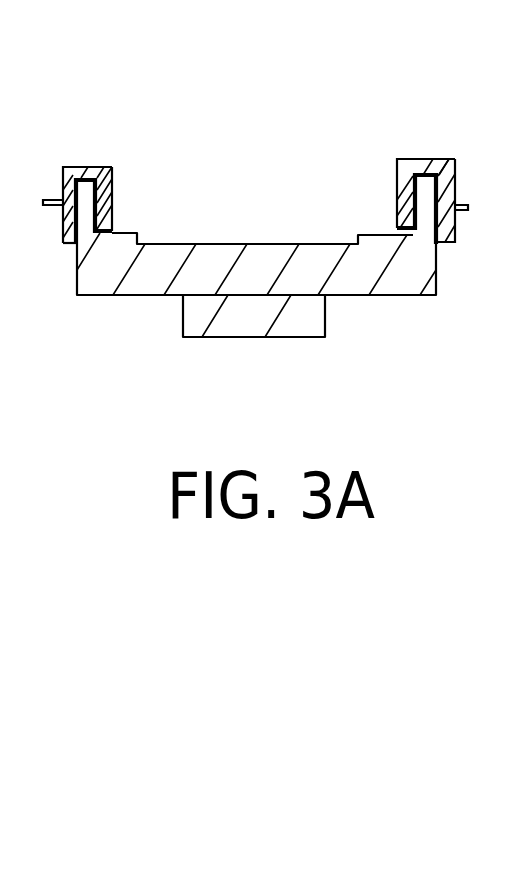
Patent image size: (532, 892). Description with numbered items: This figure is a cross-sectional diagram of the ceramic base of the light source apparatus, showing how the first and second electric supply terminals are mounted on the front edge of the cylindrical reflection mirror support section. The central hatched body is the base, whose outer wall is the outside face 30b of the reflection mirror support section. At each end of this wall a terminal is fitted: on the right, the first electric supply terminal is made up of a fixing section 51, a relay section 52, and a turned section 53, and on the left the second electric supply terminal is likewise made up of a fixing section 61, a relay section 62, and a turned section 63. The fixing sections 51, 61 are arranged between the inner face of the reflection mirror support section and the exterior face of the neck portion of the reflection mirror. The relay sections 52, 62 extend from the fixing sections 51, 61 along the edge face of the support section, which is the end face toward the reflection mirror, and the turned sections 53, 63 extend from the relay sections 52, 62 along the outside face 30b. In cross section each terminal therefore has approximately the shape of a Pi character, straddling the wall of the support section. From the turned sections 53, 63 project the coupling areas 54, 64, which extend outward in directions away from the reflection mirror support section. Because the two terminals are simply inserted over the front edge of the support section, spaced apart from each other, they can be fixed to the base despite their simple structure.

The outside face of the reflection mirror support section 30b is at (438, 279).
The fixing section 51 is at (402, 192).
The relay section 52 is at (422, 158).
The turned section 53 is at (455, 185).
The coupling area 54 is at (468, 208).
The fixing section 61 is at (113, 188).
The relay section 62 is at (93, 168).
The turned section 63 is at (62, 190).
The coupling area 64 is at (50, 207).